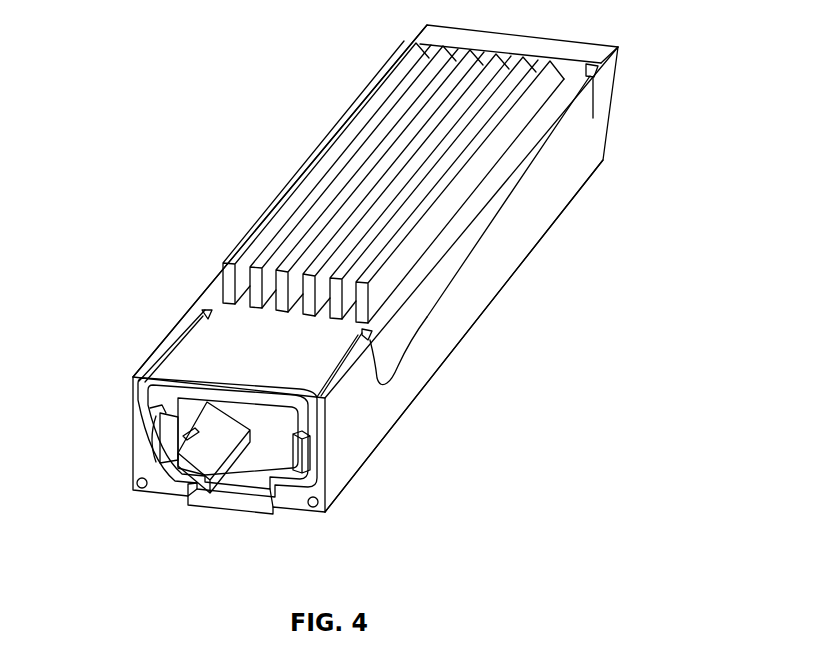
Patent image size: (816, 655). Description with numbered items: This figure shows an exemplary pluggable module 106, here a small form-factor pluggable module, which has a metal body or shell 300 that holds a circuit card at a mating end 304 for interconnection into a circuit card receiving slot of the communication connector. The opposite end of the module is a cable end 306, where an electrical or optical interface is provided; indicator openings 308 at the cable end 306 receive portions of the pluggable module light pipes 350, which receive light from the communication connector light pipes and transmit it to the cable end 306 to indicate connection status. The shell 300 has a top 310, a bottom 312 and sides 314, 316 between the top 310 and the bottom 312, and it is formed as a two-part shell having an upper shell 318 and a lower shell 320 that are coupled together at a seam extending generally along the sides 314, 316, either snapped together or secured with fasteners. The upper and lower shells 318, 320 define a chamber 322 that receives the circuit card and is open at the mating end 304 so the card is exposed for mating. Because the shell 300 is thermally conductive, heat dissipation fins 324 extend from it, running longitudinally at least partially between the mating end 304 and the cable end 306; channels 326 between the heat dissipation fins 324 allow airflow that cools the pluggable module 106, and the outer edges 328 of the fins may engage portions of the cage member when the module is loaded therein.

The pluggable module 106 is at (382, 300).
The shell 300 is at (575, 153).
The mating end 304 is at (621, 73).
The cable end 306 is at (218, 515).
The indicator openings 308 is at (132, 490).
The top 310 is at (222, 327).
The bottom 312 is at (417, 397).
The side 314 is at (450, 315).
The side 316 is at (193, 310).
The upper shell 318 is at (575, 117).
The lower shell 320 is at (560, 188).
The chamber 322 is at (210, 450).
The heat dissipation fins 324 is at (347, 115).
The channels 326 is at (380, 103).
The outer edges 328 is at (413, 77).
The pluggable module light pipes 350 is at (141, 490).